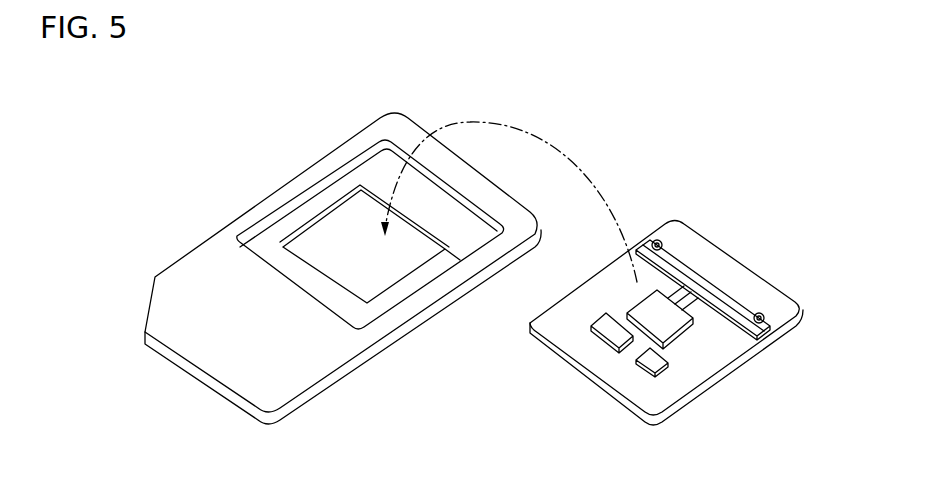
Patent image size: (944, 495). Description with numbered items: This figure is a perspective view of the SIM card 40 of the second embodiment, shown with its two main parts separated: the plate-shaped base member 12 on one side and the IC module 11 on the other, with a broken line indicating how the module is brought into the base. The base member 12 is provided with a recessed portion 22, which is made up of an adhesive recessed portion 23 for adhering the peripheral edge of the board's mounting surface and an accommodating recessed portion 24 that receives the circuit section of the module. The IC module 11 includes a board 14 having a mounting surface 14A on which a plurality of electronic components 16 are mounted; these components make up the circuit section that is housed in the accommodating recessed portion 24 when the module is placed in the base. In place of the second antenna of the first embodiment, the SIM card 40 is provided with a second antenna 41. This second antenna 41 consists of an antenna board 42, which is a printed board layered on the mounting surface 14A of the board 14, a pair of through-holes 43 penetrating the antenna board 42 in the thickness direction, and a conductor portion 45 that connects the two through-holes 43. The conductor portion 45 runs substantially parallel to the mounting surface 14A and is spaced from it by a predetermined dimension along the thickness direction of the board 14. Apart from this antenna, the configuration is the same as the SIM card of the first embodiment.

The IC module 11 is at (687, 313).
The base member 12 is at (462, 164).
The board 14 is at (700, 392).
The mounting surface 14A is at (702, 370).
The electronic components 16 is at (611, 334).
The recessed portion 22 is at (276, 92).
The adhesive recessed portion 23 is at (322, 200).
The accommodating recessed portion 24 is at (335, 248).
The SIM card 40 is at (613, 123).
The second antenna 41 is at (689, 244).
The antenna board 42 is at (754, 305).
The through-holes 43 is at (654, 240).
The conductor portion 45 is at (731, 305).